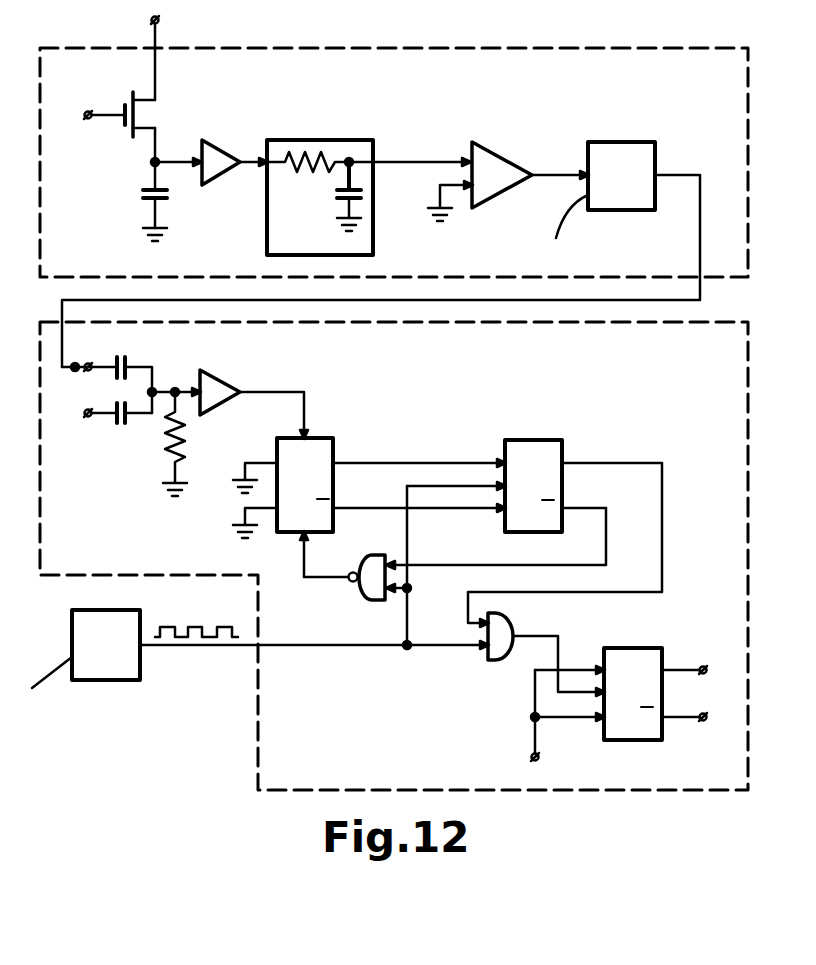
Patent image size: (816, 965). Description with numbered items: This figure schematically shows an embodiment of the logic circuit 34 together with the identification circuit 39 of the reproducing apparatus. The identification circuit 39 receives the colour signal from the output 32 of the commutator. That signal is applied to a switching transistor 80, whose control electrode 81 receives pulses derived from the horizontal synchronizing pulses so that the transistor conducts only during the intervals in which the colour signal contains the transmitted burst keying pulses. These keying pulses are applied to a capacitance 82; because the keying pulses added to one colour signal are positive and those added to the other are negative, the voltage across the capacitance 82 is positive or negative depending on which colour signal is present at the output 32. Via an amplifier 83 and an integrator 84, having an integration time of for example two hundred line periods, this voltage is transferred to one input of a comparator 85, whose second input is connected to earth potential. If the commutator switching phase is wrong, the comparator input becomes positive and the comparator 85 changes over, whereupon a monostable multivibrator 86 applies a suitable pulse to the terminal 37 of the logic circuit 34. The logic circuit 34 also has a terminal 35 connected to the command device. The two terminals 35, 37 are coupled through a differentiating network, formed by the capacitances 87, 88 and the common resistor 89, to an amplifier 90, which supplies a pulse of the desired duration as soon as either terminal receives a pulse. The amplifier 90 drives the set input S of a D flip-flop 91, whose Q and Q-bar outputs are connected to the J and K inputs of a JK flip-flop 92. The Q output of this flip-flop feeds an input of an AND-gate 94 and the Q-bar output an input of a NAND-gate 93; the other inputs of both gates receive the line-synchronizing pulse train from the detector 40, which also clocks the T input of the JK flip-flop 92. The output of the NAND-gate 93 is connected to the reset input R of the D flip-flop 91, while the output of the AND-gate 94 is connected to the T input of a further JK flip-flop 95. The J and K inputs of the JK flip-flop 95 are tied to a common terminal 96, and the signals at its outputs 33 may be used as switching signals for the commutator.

The output of the commutator 32 is at (162, 20).
The identification circuit 39 is at (688, 48).
The switching transistor 80 is at (130, 100).
The control electrode 81 is at (85, 113).
The capacitance 82 is at (143, 192).
The amplifier 83 is at (220, 142).
The integrator 84 is at (287, 141).
The comparator 85 is at (498, 143).
The monostable multivibrator 86 is at (600, 142).
The logic circuit 34 is at (695, 323).
The terminal 37 is at (88, 372).
The terminal 35 is at (88, 418).
The capacitance 87 is at (121, 357).
The capacitance 88 is at (122, 424).
The common resistor 89 is at (184, 440).
The amplifier 90 is at (212, 378).
The D flip-flop 91 is at (325, 446).
The JK flip-flop 92 is at (517, 440).
The NAND-gate 93 is at (369, 563).
The AND-gate 94 is at (505, 630).
The JK flip-flop 95 is at (619, 648).
The common terminal 96 is at (531, 757).
The outputs Q and Q-bar 33 is at (711, 704).
The detector 40 is at (72, 628).